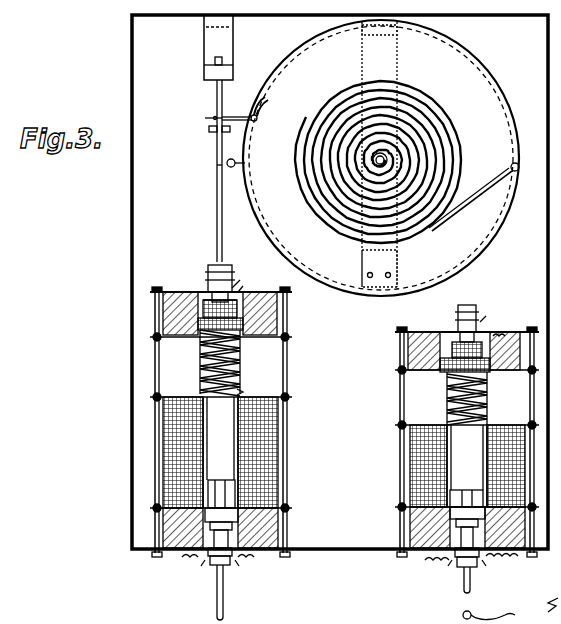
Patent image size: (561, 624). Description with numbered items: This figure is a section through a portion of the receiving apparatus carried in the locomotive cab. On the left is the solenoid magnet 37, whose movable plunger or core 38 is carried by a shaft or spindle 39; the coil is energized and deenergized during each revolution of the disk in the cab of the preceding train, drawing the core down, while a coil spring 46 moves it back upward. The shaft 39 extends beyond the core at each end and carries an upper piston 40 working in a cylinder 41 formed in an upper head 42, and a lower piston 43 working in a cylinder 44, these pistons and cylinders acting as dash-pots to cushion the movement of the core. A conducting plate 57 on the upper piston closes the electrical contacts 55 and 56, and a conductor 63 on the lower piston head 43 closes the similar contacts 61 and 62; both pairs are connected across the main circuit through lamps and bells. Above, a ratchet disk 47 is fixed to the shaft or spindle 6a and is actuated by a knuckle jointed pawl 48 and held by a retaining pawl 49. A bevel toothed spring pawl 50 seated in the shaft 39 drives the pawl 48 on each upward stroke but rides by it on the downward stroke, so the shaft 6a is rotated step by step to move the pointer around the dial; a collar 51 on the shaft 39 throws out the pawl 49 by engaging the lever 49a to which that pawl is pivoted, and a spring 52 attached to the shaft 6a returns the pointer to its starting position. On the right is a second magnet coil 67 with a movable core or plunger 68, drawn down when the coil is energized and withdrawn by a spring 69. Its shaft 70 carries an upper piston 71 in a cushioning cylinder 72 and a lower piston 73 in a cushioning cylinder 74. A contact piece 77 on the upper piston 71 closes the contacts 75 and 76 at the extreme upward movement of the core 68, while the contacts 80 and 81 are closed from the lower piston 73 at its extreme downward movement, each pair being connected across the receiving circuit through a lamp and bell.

The shaft or spindle 6a is at (386, 158).
The solenoid magnet 37 is at (170, 450).
The movable plunger or core 38 is at (220, 452).
The shaft or spindle 39 is at (220, 482).
The upper piston 40 is at (245, 323).
The cylinder 41 is at (250, 310).
The upper head 42 is at (240, 350).
The lower piston 43 is at (270, 514).
The cylinder 44 is at (238, 528).
The coil spring 46 is at (238, 385).
The ratchet disk 47 is at (381, 158).
The knuckle jointed pawl 48 is at (238, 174).
The retaining pawl 49 is at (262, 97).
The lever 49a is at (198, 114).
The bevel toothed spring pawl 50 is at (222, 170).
The collar 51 is at (209, 130).
The spring 52 is at (337, 208).
The electrical contact 55 is at (205, 297).
The electrical contact 56 is at (235, 305).
The conducting plate 57 is at (180, 312).
The contact 61 is at (208, 552).
The contact 62 is at (232, 560).
The conductor 63 is at (185, 553).
The second magnet coil 67 is at (415, 455).
The movable core or plunger 68 is at (467, 466).
The spring 69 is at (447, 392).
The shaft 70 is at (450, 494).
The upper piston 71 is at (450, 366).
The cushioning cylinder 72 is at (445, 352).
The lower piston 73 is at (430, 518).
The cushioning cylinder 74 is at (430, 535).
The contact 75 is at (460, 334).
The contact 76 is at (482, 336).
The contact piece 77 is at (500, 338).
The contact 80 is at (452, 556).
The contact 81 is at (484, 556).